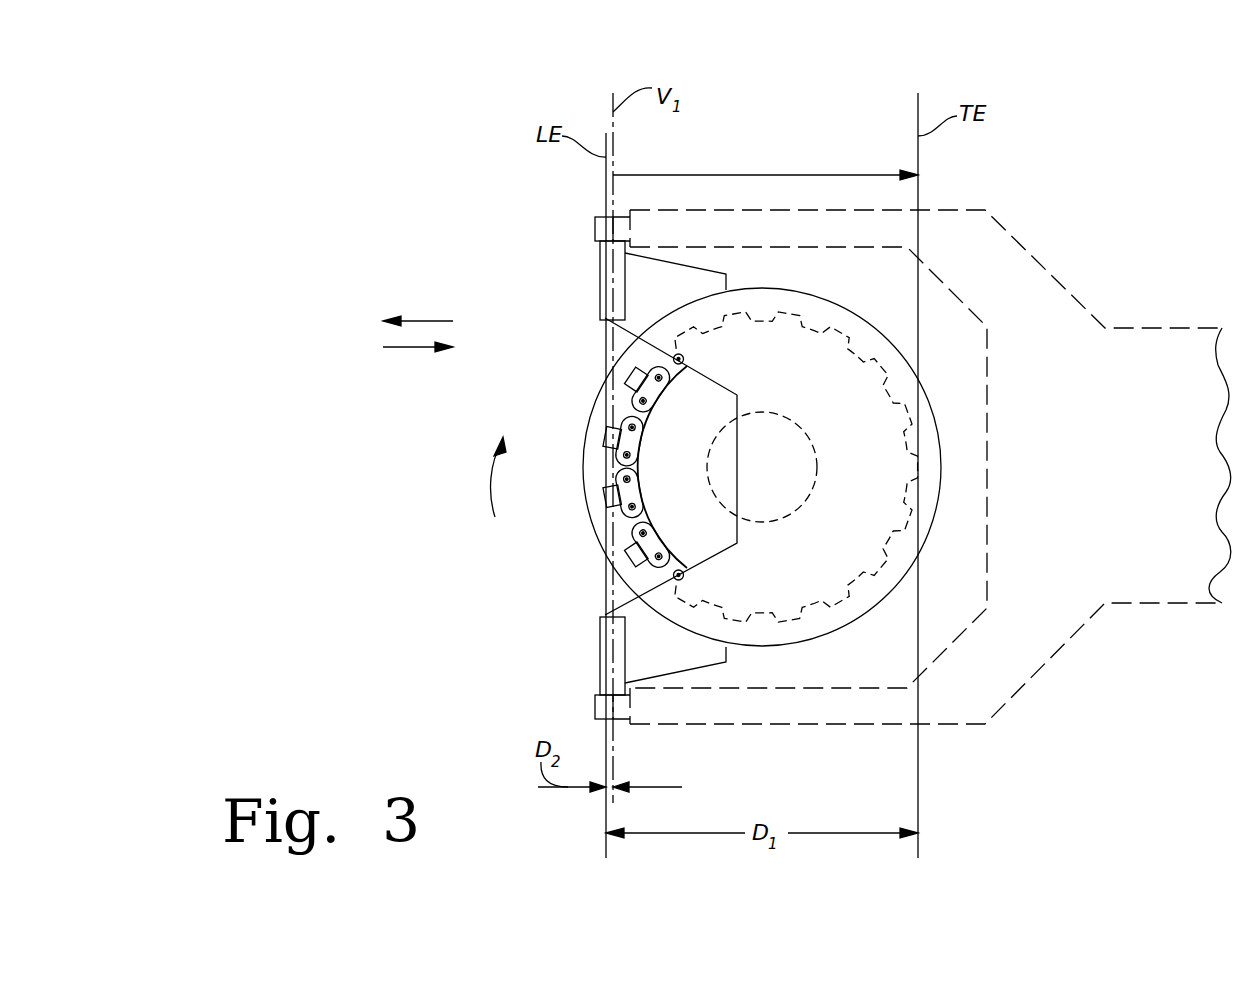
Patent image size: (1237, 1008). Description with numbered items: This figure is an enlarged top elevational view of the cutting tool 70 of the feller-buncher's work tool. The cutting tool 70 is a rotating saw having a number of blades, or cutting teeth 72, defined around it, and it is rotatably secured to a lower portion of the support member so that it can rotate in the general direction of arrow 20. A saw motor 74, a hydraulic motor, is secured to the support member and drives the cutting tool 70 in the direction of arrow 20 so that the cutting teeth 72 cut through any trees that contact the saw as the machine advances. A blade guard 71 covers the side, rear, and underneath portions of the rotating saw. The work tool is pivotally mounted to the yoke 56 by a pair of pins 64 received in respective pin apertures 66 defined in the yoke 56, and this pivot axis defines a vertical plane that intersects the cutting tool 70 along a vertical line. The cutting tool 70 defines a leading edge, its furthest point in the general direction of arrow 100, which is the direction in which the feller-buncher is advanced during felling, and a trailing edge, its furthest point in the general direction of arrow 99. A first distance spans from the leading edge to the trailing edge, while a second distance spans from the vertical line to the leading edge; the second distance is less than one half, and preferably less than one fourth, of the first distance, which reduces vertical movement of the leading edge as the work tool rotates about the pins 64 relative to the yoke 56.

The arrow 20 is at (485, 485).
The yoke 56 is at (1050, 268).
The pins 64 is at (600, 278).
The pin apertures 66 is at (598, 246).
The cutting tool 70 is at (612, 404).
The blade guard 71 is at (930, 403).
The cutting teeth 72 is at (652, 374).
The saw motor 74 is at (818, 466).
The arrow 99 is at (405, 348).
The arrow 100 is at (420, 320).